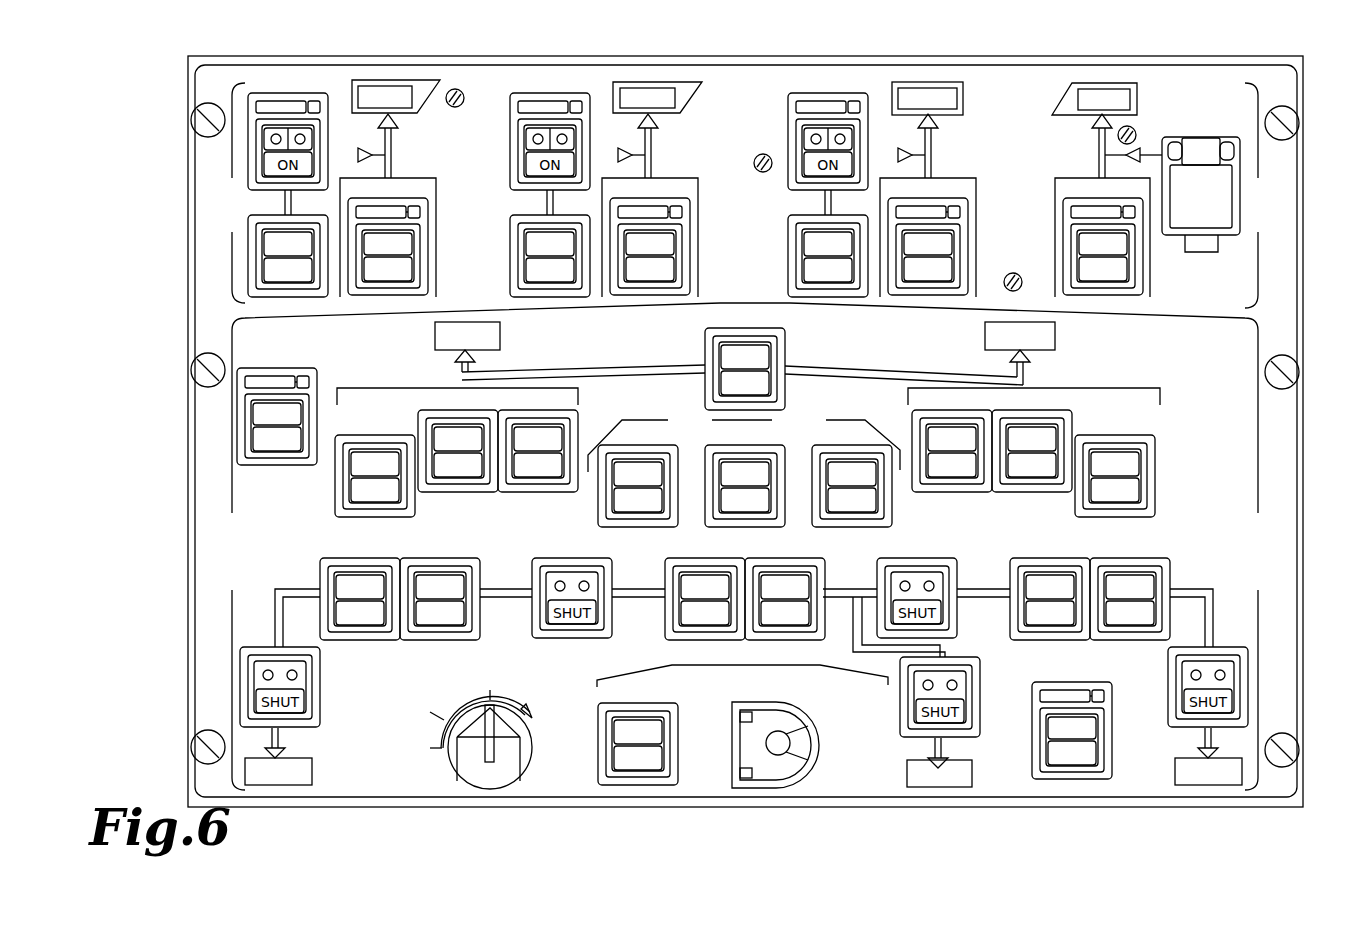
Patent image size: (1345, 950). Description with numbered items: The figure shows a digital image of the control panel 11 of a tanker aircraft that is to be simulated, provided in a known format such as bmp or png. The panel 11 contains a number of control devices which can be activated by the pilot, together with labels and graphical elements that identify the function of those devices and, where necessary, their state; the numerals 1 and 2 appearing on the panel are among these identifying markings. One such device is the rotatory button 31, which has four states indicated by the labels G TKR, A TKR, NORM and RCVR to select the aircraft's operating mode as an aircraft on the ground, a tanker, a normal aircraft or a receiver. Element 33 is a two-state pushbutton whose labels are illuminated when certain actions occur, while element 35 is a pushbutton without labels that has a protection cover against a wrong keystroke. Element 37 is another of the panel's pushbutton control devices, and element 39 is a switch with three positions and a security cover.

The control panel 11 is at (1306, 108).
The engine 1 hydraulic system controls 1 is at (409, 237).
The engine 2 hydraulic system controls 2 is at (1078, 237).
The rotatory button 31 is at (492, 747).
The pushbutton 33 is at (418, 622).
The pushbutton 35 is at (1205, 237).
The mode fault/fwd pushbutton switch 37 is at (612, 722).
The switch 39 is at (778, 752).